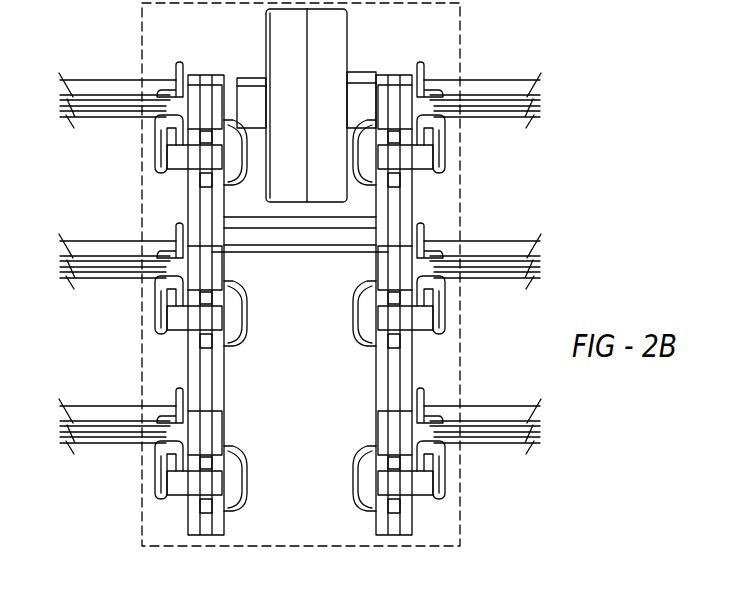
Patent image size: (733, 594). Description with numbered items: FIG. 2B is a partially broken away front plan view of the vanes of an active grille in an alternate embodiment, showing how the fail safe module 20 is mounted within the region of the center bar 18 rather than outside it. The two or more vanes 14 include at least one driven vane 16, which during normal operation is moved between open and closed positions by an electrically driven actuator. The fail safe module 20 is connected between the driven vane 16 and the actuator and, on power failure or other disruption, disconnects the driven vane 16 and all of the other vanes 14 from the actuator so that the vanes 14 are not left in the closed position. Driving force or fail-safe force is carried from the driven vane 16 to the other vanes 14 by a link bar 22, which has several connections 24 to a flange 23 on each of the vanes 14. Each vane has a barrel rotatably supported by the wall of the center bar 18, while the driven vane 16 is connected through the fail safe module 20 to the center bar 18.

The vanes 14 is at (112, 88).
The driven vane 16 is at (508, 108).
The center bar 18 is at (462, 50).
The fail safe module 20 is at (333, 48).
The link bar 22 is at (405, 525).
The flange 23 is at (158, 164).
The connections 24 is at (228, 128).